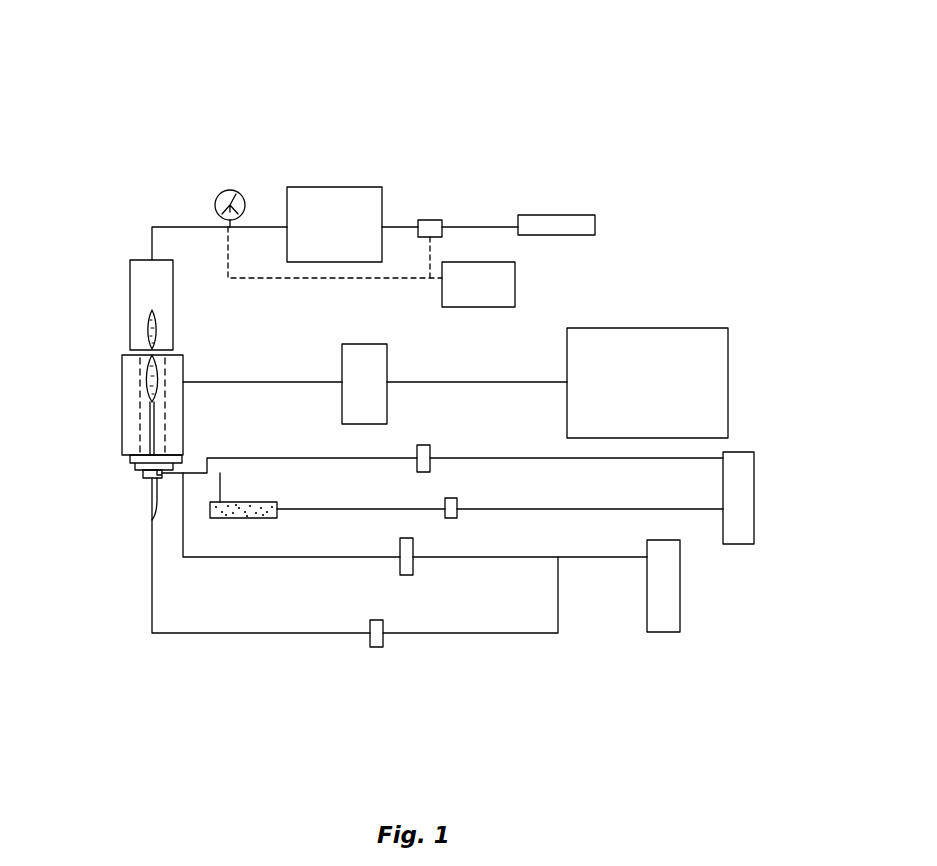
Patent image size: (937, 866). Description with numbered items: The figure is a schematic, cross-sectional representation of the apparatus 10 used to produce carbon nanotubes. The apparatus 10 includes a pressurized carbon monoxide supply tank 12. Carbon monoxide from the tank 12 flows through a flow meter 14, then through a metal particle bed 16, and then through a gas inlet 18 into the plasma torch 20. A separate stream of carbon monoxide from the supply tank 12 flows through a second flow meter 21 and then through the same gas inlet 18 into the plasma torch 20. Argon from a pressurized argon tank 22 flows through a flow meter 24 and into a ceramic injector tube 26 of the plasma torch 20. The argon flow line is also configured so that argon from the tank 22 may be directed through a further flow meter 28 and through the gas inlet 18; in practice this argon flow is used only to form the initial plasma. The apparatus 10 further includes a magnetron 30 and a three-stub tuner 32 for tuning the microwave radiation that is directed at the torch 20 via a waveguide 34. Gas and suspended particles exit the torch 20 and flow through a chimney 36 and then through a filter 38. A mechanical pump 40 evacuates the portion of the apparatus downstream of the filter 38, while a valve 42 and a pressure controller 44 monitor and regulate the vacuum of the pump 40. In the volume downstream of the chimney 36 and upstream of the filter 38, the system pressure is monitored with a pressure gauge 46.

The apparatus 10 is at (135, 90).
The pressurized carbon monoxide supply tank 12 is at (754, 460).
The flow meter 14 is at (452, 498).
The metal particle bed 16 is at (258, 502).
The gas inlet 18 is at (153, 518).
The plasma torch 20 is at (122, 382).
The flow meter 21 is at (425, 445).
The pressurized argon tank 22 is at (680, 608).
The flow meter 24 is at (383, 640).
The ceramic injector tube 26 is at (148, 484).
The flow meter 28 is at (413, 566).
The magnetron 30 is at (728, 382).
The 3-stub tuner 32 is at (387, 358).
The waveguide 34 is at (207, 384).
The chimney 36 is at (130, 305).
The filter 38 is at (343, 187).
The mechanical pump 40 is at (595, 224).
The valve 42 is at (431, 220).
The pressure controller 44 is at (515, 285).
The pressure gauge 46 is at (220, 195).